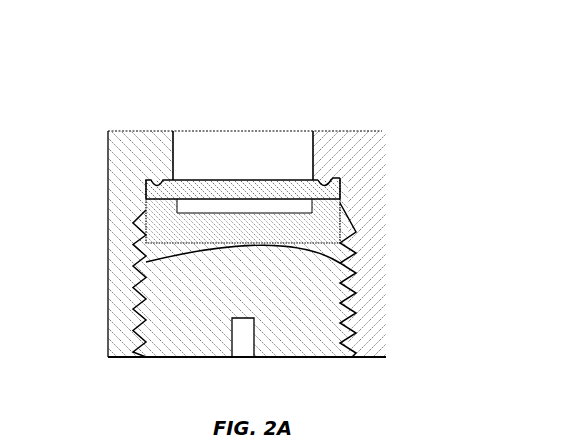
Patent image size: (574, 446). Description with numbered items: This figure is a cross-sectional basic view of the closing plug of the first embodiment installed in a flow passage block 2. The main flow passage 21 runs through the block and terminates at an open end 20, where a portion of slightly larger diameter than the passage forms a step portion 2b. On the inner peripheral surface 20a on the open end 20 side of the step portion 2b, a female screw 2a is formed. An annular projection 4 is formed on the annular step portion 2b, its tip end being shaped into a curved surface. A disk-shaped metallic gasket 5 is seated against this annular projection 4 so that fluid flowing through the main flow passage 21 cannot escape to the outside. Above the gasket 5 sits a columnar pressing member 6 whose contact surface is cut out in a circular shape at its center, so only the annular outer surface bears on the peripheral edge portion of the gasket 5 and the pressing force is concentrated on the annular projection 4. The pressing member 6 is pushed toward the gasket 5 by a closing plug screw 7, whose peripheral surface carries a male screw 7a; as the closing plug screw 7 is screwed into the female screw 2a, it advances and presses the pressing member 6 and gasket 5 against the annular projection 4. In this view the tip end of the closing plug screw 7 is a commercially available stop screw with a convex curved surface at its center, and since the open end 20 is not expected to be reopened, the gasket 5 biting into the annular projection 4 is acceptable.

The flow passage block 2 is at (288, 139).
The female screw 2a is at (108, 291).
The step portion 2b is at (305, 177).
The annular projection 4 is at (221, 244).
The gasket 5 is at (108, 194).
The pressing member 6 is at (338, 238).
The closing plug screw 7 is at (277, 280).
The male screw 7a is at (348, 320).
The open end 20 is at (198, 358).
The inner peripheral surface 20a is at (345, 178).
The main flow passage 21 is at (243, 144).